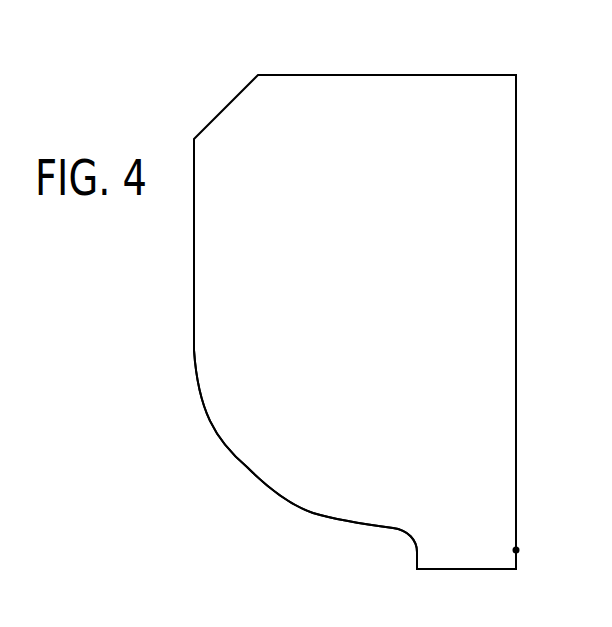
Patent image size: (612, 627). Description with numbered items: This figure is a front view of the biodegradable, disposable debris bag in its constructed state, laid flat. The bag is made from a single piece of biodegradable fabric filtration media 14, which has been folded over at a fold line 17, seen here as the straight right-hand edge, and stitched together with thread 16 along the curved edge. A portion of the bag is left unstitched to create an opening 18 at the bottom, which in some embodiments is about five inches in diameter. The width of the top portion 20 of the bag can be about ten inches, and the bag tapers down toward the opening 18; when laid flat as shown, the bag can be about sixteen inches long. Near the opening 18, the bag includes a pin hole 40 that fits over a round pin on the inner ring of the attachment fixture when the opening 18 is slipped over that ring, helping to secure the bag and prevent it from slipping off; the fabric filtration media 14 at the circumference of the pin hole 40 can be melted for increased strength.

The biodegradable fabric filtration media 14 is at (224, 257).
The thread 16 is at (247, 468).
The fold line 17 is at (516, 435).
The opening 18 is at (437, 571).
The top portion 20 is at (455, 112).
The pin hole 40 is at (516, 550).